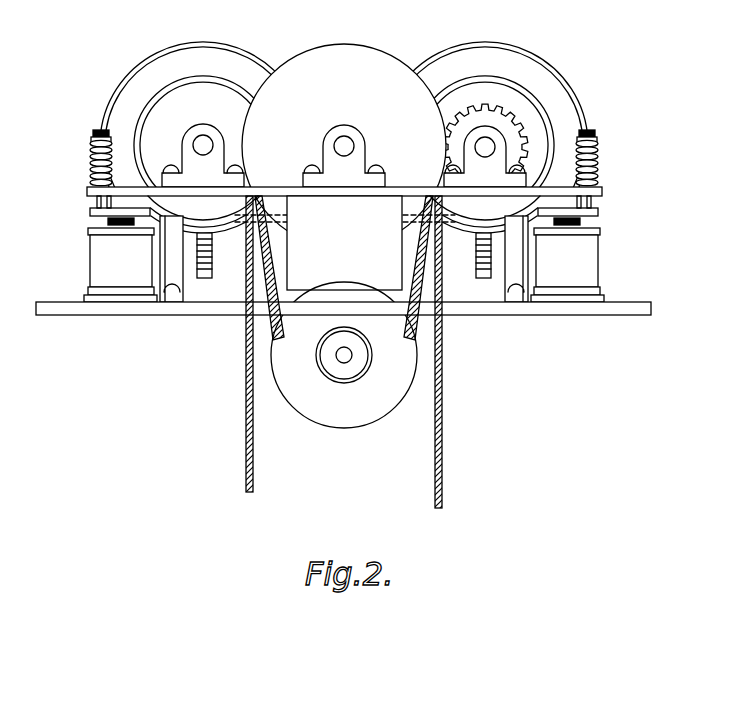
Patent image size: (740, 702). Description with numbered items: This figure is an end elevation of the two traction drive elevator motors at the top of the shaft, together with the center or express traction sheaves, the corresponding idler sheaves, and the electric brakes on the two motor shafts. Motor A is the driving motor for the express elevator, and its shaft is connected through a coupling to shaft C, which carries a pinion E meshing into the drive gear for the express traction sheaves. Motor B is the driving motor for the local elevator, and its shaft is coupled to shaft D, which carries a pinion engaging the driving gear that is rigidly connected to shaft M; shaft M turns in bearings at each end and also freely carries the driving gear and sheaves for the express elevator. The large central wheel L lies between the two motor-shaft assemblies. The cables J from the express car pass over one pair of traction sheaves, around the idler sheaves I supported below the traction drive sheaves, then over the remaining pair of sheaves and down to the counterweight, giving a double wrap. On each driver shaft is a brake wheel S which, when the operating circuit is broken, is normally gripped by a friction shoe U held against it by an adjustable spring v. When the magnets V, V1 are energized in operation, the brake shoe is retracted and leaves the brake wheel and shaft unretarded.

The driving motor for the local elevator B is at (191, 44).
The brake wheel S is at (215, 76).
The shaft D is at (207, 142).
The large central wheel L is at (323, 55).
The shaft M is at (346, 142).
The shaft C is at (456, 112).
The driving motor for the express elevator A is at (493, 46).
The pinion E is at (505, 115).
The adjustable spring v is at (91, 157).
The magnet V is at (103, 257).
The magnet V1 is at (588, 258).
The friction shoe U is at (173, 268).
The idler sheaves I is at (378, 408).
The cables J is at (249, 483).